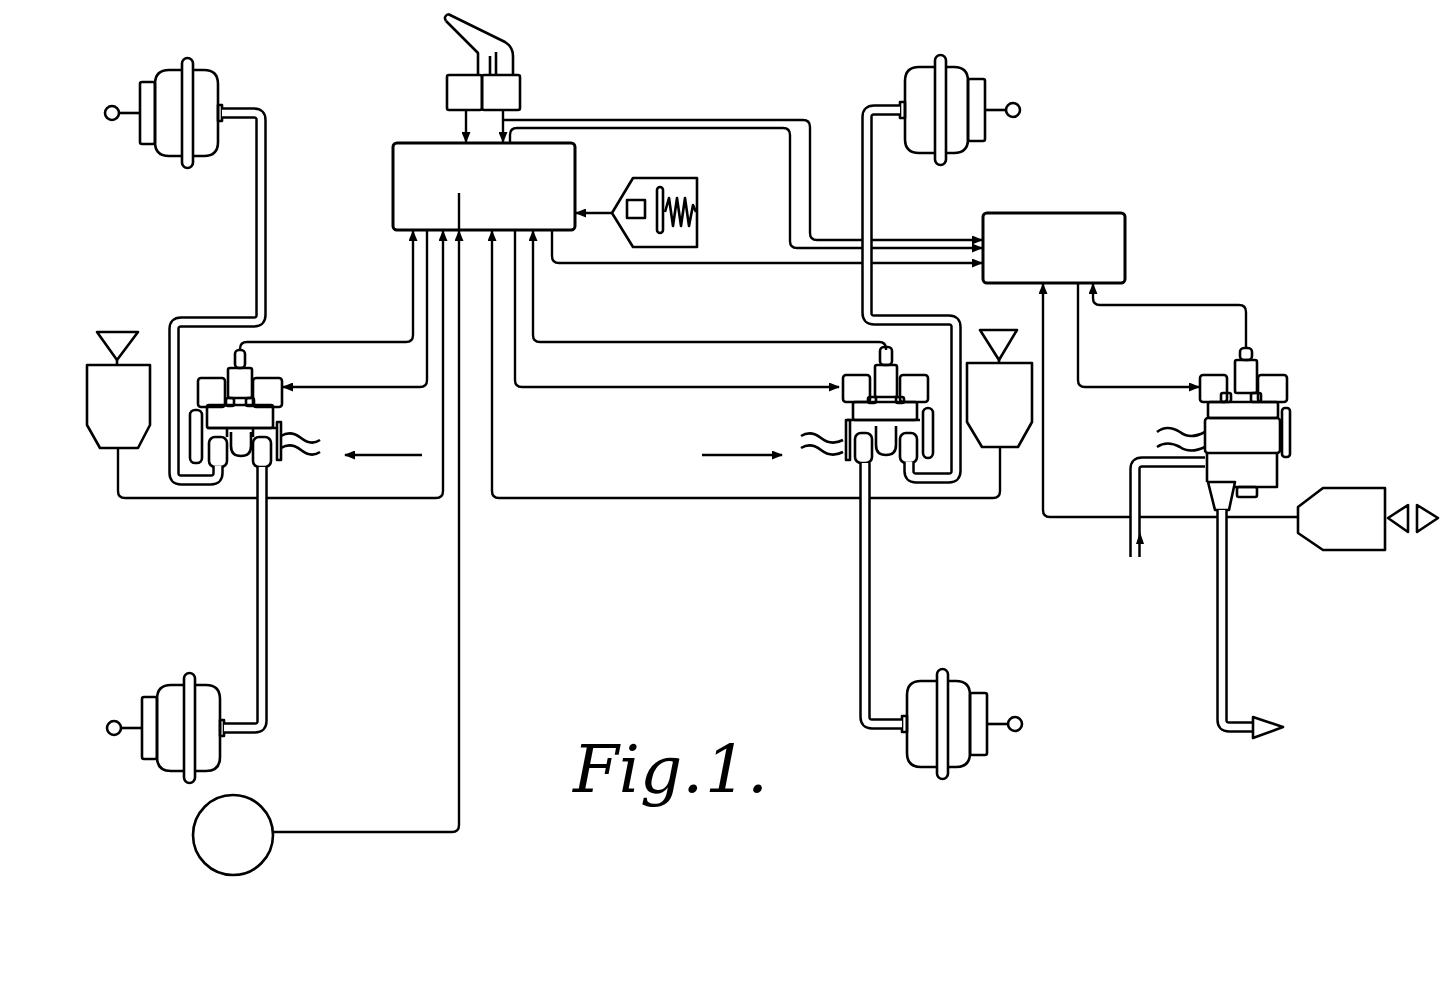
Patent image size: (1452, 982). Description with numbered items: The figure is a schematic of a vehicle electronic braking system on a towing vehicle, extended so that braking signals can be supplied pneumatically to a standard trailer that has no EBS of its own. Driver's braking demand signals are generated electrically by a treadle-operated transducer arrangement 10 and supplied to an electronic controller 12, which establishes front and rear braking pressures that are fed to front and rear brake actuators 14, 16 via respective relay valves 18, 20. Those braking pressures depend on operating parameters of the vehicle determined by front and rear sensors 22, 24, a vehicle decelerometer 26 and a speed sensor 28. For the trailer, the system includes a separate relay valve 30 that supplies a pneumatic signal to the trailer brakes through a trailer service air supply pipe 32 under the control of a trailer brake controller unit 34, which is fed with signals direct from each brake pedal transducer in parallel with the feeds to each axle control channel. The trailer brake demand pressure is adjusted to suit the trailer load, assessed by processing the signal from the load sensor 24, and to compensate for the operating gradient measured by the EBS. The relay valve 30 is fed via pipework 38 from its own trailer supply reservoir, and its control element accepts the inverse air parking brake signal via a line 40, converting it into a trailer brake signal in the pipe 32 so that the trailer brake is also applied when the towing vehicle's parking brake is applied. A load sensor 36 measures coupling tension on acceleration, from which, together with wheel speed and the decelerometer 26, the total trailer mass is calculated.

The treadle-operated transducer arrangement 10 is at (519, 42).
The electronic controller 12 is at (568, 173).
The front brake actuators 14 is at (218, 90).
The rear brake actuators 16 is at (973, 93).
The front relay valve 18 is at (272, 331).
The rear relay valve 20 is at (838, 459).
The front sensor 22 is at (105, 452).
The rear sensor 24 is at (980, 447).
The vehicle decelerometer 26 is at (698, 188).
The speed sensor 28 is at (278, 795).
The relay valve 30 is at (1297, 430).
The trailer service air supply pipe 32 is at (1227, 633).
The trailer brake controller unit 34 is at (1125, 255).
The load sensor 36 is at (1340, 488).
The pipework 38 is at (1178, 440).
The line 40 is at (1130, 538).